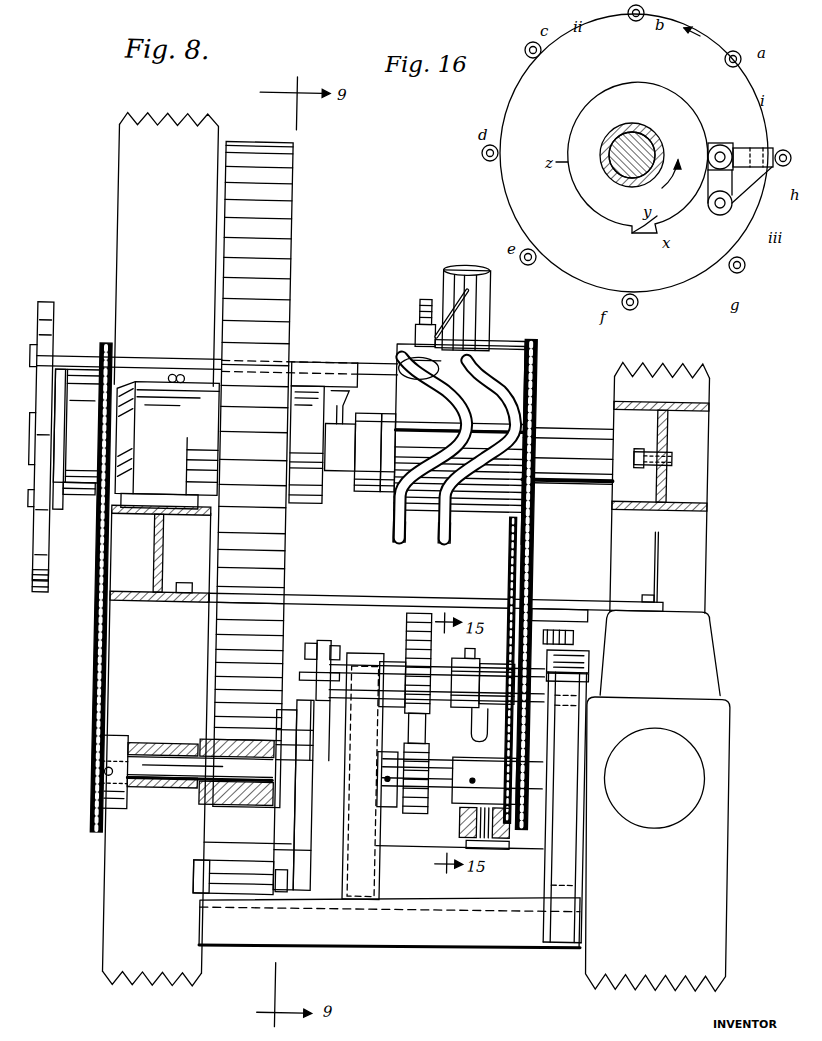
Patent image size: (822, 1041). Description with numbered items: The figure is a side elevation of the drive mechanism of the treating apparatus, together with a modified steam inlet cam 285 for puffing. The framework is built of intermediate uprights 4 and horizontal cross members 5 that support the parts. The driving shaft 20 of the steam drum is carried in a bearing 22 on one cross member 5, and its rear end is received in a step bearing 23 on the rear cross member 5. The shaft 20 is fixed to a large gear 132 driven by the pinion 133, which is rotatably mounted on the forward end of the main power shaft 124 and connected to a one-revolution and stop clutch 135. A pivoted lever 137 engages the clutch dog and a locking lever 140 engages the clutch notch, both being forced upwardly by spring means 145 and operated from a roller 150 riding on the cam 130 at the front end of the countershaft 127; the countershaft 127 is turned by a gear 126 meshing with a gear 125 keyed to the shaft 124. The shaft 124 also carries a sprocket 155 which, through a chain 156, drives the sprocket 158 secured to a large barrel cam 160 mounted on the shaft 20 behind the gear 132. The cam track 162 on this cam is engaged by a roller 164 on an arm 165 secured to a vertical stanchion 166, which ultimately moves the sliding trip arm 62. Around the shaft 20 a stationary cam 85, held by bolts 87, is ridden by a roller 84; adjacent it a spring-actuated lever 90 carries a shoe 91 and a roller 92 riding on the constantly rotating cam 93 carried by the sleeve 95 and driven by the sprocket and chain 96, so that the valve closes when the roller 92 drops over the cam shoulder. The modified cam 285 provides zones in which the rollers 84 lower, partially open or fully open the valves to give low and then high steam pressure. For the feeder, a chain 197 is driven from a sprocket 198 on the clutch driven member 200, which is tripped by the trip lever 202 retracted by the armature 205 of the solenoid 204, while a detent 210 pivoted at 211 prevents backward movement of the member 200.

In FIG. 8, the intermediate uprights 4 is at (114, 888).
In FIG. 8, the intermediate horizontal cross members 5 is at (166, 551).
In FIG. 8, the driving shaft 20 is at (570, 478).
In FIG. 16, the driving shaft 20 is at (645, 142).
In FIG. 8, the bearing 22 is at (150, 386).
In FIG. 8, the step bearing 23 is at (655, 448).
In FIG. 8, the sliding trip arm 62 is at (80, 358).
In FIG. 16, the roller 84 is at (628, 14).
In FIG. 8, the cam 85 is at (50, 562).
In FIG. 8, the bolts 87 is at (36, 596).
In FIG. 16, the pivoted spring-actuated lever 90 is at (708, 180).
In FIG. 16, the shoe 91 is at (772, 150).
In FIG. 16, the roller 92 is at (718, 147).
In FIG. 16, the constantly rotating cam 93 is at (686, 110).
In FIG. 8, the sleeve 95 is at (90, 500).
In FIG. 8, the sprocket and chain 96 is at (99, 662).
In FIG. 8, the main power shaft 124 is at (158, 760).
In FIG. 8, the gear 125 is at (418, 811).
In FIG. 8, the gear 126 is at (411, 641).
In FIG. 8, the countershaft 127 is at (439, 700).
In FIG. 8, the cam 130 is at (336, 650).
In FIG. 8, the large gear 132 is at (288, 233).
In FIG. 8, the pinion 133 is at (250, 808).
In FIG. 8, the one-revolution and stop clutch 135 is at (283, 826).
In FIG. 8, the pivoted lever 137 is at (290, 852).
In FIG. 8, the locking lever 140 is at (330, 850).
In FIG. 8, the spring means 145 is at (300, 892).
In FIG. 8, the roller 150 is at (338, 645).
In FIG. 8, the sprocket 155 is at (556, 721).
In FIG. 8, the chain 156 is at (537, 563).
In FIG. 8, the sprocket 158 is at (536, 378).
In FIG. 8, the barrel cam 160 is at (490, 505).
In FIG. 8, the cam track 162 is at (486, 375).
In FIG. 8, the roller 164 is at (414, 335).
In FIG. 8, the arm 165 is at (478, 352).
In FIG. 8, the vertical pipe or stanchion 166 is at (488, 283).
In FIG. 8, the chain 197 is at (512, 554).
In FIG. 8, the sprocket 198 is at (530, 640).
In FIG. 8, the clutch driven member 200 is at (458, 668).
In FIG. 8, the trip lever 202 is at (524, 755).
In FIG. 8, the solenoid 204 is at (475, 840).
In FIG. 8, the armature 205 is at (484, 738).
In FIG. 8, the detent 210 is at (536, 622).
In FIG. 8, the pivot 211 is at (548, 646).
In FIG. 16, the modified steam inlet cam 285 is at (672, 283).